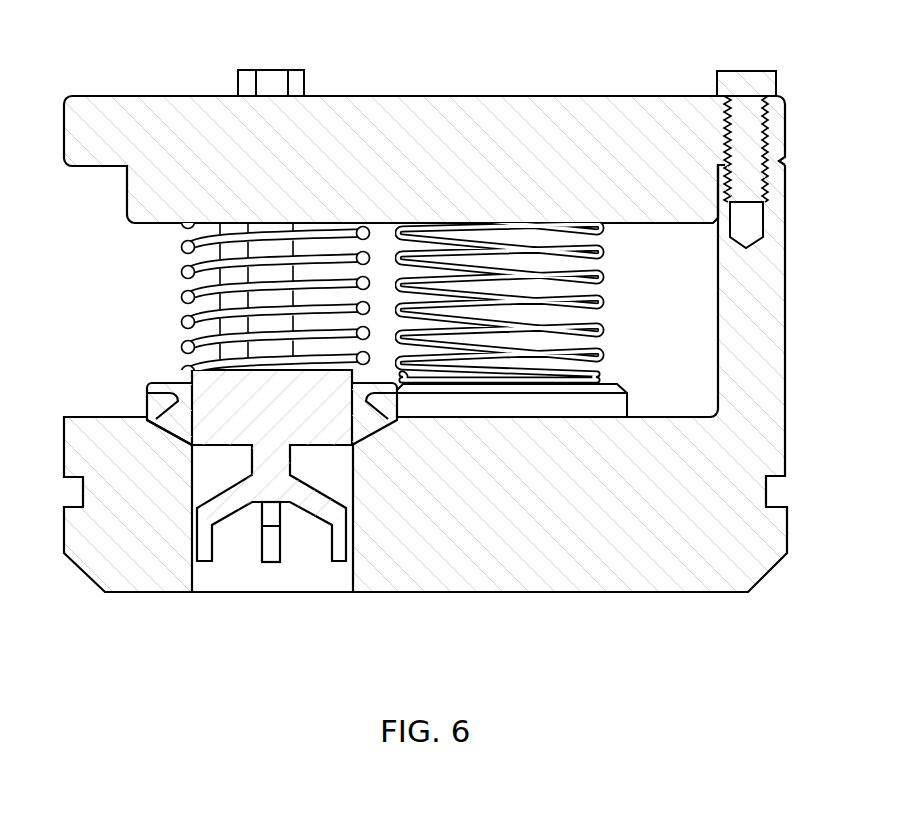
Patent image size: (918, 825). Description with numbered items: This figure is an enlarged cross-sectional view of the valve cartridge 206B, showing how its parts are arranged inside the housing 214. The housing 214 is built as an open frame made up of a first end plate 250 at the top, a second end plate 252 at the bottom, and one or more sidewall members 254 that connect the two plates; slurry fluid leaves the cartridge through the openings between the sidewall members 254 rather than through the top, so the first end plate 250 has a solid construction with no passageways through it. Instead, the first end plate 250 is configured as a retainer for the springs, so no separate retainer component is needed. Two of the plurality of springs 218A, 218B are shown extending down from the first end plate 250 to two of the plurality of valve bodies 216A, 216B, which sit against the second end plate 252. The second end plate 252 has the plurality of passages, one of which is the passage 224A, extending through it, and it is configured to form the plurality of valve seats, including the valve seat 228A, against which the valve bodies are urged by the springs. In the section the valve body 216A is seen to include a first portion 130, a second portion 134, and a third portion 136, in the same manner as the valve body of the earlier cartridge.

The valve cartridge 206B is at (131, 46).
The housing 214 is at (424, 135).
The first end plate 250 is at (471, 125).
The sidewall member 254 is at (750, 282).
The second end plate 252 is at (556, 527).
The spring 218A is at (190, 297).
The spring 218B is at (592, 295).
The valve body 216A is at (203, 513).
The first portion 130 is at (207, 398).
The valve body 216B is at (617, 385).
The second portion 134 is at (157, 410).
The valve seat 228A is at (168, 442).
The passage 224A is at (232, 563).
The third portion 136 is at (277, 478).